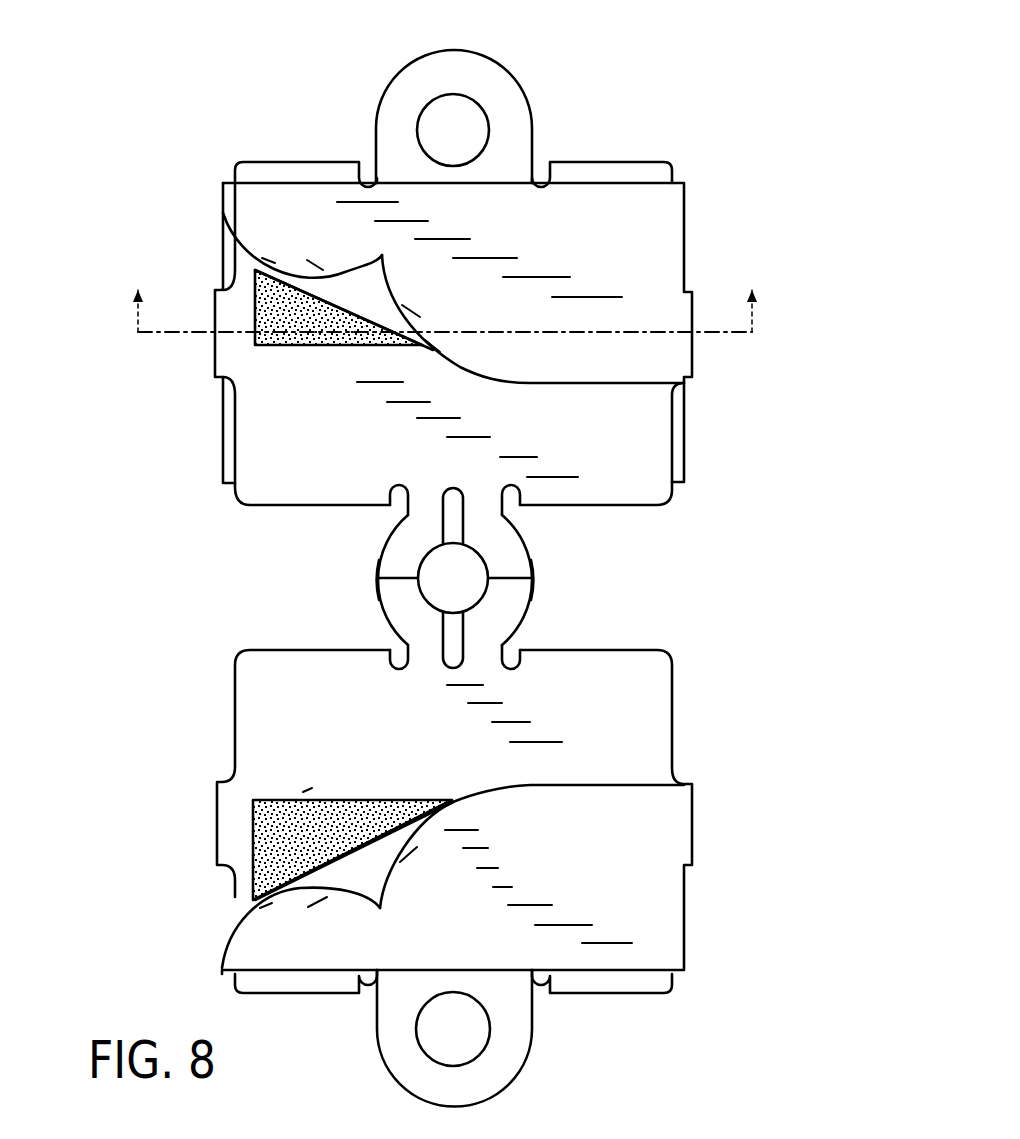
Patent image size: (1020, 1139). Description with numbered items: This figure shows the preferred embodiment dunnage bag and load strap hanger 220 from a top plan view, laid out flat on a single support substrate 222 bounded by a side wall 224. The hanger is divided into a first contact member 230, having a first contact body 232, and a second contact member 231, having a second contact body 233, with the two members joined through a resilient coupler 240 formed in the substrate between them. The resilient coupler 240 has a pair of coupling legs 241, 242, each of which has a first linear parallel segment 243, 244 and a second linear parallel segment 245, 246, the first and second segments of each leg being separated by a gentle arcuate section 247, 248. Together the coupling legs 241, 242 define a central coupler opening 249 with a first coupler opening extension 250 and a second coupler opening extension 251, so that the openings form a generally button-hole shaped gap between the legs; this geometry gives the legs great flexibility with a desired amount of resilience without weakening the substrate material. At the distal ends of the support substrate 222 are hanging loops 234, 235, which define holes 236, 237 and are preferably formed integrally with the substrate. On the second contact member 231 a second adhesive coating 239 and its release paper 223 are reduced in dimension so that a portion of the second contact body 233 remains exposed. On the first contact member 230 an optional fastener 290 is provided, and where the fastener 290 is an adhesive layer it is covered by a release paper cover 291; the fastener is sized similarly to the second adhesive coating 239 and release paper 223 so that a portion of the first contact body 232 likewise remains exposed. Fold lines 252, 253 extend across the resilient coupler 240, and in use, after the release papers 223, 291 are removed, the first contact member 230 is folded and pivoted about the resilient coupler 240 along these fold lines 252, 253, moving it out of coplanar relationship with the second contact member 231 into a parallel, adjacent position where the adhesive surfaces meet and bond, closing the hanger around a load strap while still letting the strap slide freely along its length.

The dunnage bag and load strap hanger 220 is at (122, 92).
The support substrate 222 is at (240, 157).
The release paper 223 is at (592, 827).
The side wall 224 is at (680, 465).
The first contact member 230 is at (652, 156).
The second contact member 231 is at (660, 641).
The first contact body 232 is at (590, 434).
The second contact body 233 is at (642, 709).
The hanging loop 234 is at (487, 80).
The hanging loop 235 is at (500, 1067).
The hole 236 is at (473, 135).
The hole 237 is at (472, 1020).
The second adhesive coating 239 is at (339, 836).
The resilient coupler 240 is at (536, 560).
The coupling leg 241 is at (514, 598).
The coupling leg 242 is at (397, 603).
The first linear parallel segment 243 is at (488, 517).
The first linear parallel segment 244 is at (412, 513).
The second linear parallel segment 245 is at (488, 650).
The second linear parallel segment 246 is at (412, 647).
The gentle arcuate section 247 is at (510, 550).
The gentle arcuate section 248 is at (385, 570).
The central coupler opening 249 is at (440, 568).
The first coupler opening extension 250 is at (448, 513).
The second coupler opening extension 251 is at (462, 636).
The fold line 252 is at (378, 582).
The fold line 253 is at (532, 577).
The fastener 290 is at (312, 326).
The release paper cover 291 is at (680, 212).